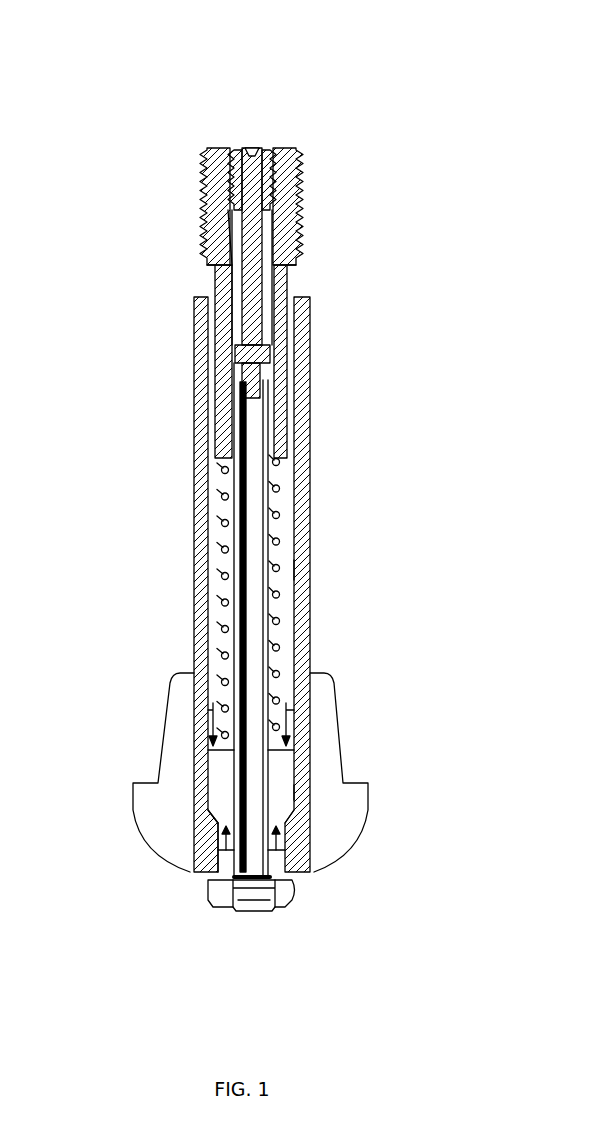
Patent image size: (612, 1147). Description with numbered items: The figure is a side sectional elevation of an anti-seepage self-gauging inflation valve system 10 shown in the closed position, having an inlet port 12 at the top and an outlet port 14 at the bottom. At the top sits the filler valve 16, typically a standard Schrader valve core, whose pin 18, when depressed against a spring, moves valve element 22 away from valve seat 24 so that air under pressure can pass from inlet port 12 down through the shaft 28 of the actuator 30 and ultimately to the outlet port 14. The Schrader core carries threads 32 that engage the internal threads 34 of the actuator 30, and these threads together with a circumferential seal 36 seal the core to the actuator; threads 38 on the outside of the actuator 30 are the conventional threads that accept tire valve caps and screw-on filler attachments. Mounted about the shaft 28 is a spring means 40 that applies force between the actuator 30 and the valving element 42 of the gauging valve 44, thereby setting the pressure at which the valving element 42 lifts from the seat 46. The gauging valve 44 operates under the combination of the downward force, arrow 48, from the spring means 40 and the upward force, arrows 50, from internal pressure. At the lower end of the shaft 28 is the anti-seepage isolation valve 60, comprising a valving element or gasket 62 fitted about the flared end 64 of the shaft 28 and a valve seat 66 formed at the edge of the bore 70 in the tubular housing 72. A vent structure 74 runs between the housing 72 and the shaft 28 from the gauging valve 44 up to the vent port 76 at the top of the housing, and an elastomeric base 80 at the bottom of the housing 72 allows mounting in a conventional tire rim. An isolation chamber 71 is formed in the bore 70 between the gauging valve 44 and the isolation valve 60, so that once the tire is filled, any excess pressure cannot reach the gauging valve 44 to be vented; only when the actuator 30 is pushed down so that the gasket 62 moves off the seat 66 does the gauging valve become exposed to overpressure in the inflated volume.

The anti-seepage self-gauging inflation valve system 10 is at (256, 31).
The inlet port 12 is at (255, 140).
The outlet port 14 is at (258, 920).
The filler valve 16 is at (240, 178).
The pin 18 is at (258, 165).
The valve element 22 is at (274, 366).
The valve seat 24 is at (272, 346).
The shaft 28 is at (237, 425).
The actuator 30 is at (293, 258).
The threads 32 is at (273, 248).
The internal threads 34 is at (272, 168).
The circumferential seal 36 is at (287, 292).
The threads 38 is at (228, 222).
The spring means 40 is at (222, 505).
The valving element 42 is at (283, 770).
The gauging valve 44 is at (316, 787).
The seat 46 is at (288, 823).
The arrow 48 is at (196, 706).
The arrows 50 is at (222, 842).
The anti-seepage isolation valve 60 is at (182, 890).
The valving element or gasket 62 is at (293, 903).
The flared end 64 is at (245, 903).
The valve seat 66 is at (300, 878).
The bore 70 is at (283, 858).
The isolation chamber 71 is at (213, 832).
The tubular housing 72 is at (308, 500).
The vent structure 74 is at (306, 568).
The vent port 76 is at (216, 297).
The elastomeric base 80 is at (163, 728).